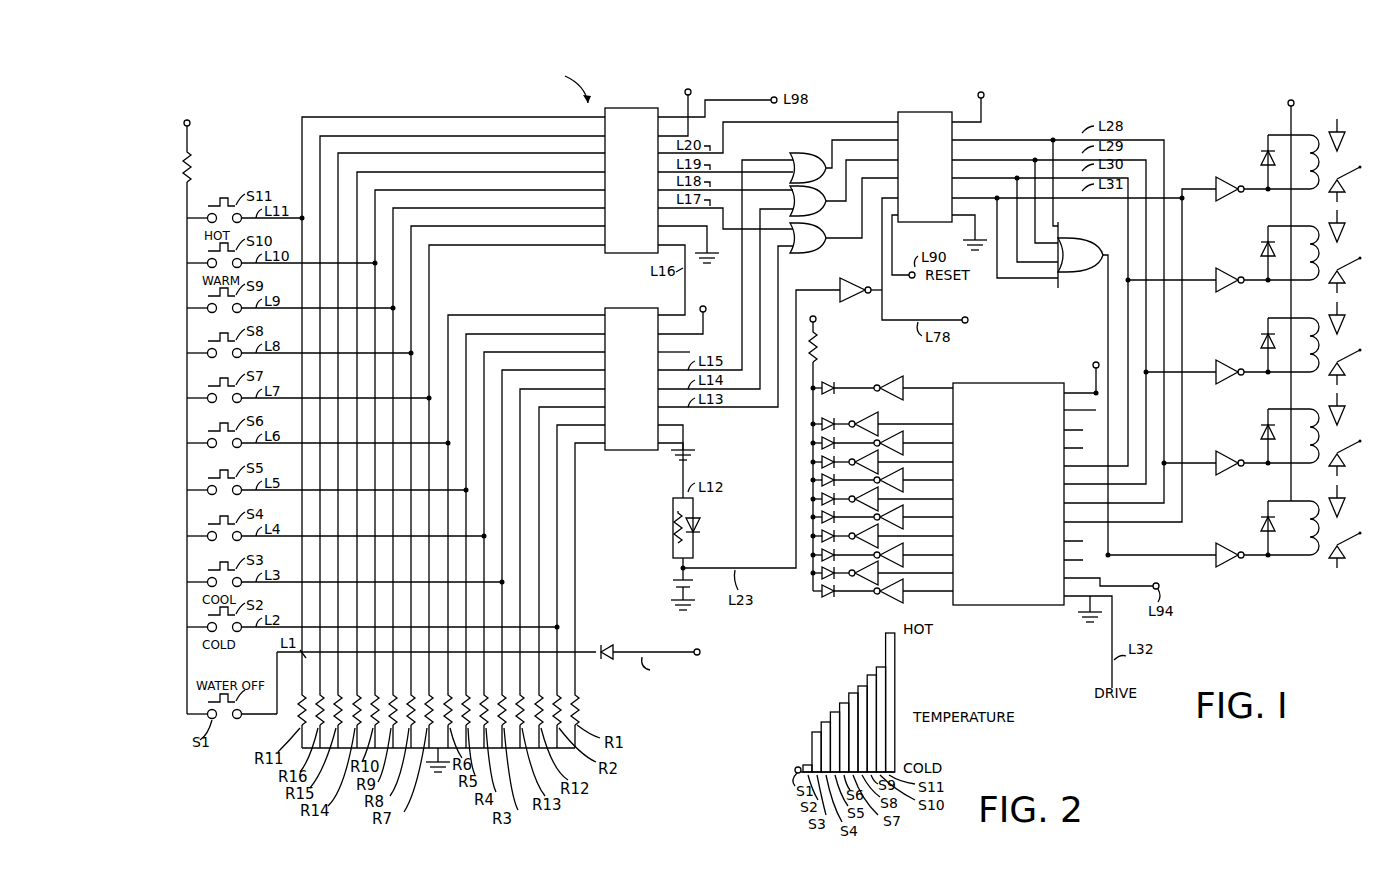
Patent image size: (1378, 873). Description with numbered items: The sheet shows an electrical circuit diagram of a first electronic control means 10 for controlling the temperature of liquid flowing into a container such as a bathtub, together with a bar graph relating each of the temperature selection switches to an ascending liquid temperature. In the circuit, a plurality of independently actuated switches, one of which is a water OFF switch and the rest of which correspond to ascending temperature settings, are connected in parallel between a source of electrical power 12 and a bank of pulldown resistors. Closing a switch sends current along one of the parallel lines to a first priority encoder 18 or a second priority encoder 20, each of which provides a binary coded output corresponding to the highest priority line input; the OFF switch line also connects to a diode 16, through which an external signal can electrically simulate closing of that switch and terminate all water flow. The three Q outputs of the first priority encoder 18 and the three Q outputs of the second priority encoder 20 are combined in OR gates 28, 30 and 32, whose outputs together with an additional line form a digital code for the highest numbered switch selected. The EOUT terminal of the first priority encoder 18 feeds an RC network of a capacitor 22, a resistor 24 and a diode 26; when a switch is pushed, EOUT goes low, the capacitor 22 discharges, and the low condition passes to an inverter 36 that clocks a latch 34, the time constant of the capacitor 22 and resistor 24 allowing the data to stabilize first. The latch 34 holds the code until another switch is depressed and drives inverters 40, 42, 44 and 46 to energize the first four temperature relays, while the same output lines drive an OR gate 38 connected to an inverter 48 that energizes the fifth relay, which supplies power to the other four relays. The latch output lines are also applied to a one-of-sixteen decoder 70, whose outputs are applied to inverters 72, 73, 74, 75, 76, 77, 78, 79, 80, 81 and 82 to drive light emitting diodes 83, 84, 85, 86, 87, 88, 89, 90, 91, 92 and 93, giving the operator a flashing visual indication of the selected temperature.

The first electronic control means 10 is at (432, 91).
The source of electrical power 12 is at (190, 122).
The diode 16 is at (612, 628).
The first priority encoder 18 is at (630, 452).
The second priority encoder 20 is at (604, 254).
The capacitor 22 is at (672, 582).
The resistor 24 is at (671, 528).
The diode 26 is at (702, 526).
The OR gate 28 is at (796, 254).
The OR gate 30 is at (816, 185).
The OR gate 32 is at (797, 152).
The latch 34 is at (938, 112).
The inverter 36 is at (866, 280).
The OR gate 38 is at (1108, 248).
The inverter 40 is at (1240, 173).
The inverter 42 is at (1240, 264).
The inverter 44 is at (1240, 356).
The inverter 46 is at (1240, 447).
The inverter 48 is at (1240, 539).
The decoder 70 is at (1022, 606).
The inverter 72 is at (893, 384).
The inverter 73 is at (872, 420).
The inverter 74 is at (893, 440).
The inverter 75 is at (872, 459).
The inverter 76 is at (893, 477).
The inverter 77 is at (872, 496).
The inverter 78 is at (893, 514).
The inverter 79 is at (872, 533).
The inverter 80 is at (893, 552).
The inverter 81 is at (872, 570).
The inverter 82 is at (893, 588).
The light emitting diode 83 is at (830, 381).
The light emitting diode 84 is at (830, 417).
The light emitting diode 85 is at (820, 440).
The light emitting diode 86 is at (820, 459).
The light emitting diode 87 is at (820, 477).
The light emitting diode 88 is at (820, 496).
The light emitting diode 89 is at (820, 514).
The light emitting diode 90 is at (820, 533).
The light emitting diode 91 is at (820, 552).
The light emitting diode 92 is at (820, 570).
The light emitting diode 93 is at (820, 590).